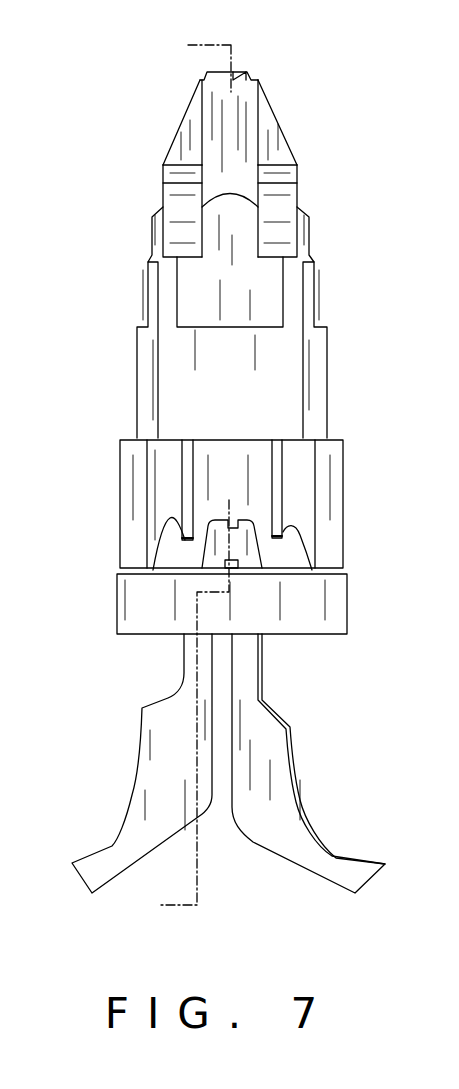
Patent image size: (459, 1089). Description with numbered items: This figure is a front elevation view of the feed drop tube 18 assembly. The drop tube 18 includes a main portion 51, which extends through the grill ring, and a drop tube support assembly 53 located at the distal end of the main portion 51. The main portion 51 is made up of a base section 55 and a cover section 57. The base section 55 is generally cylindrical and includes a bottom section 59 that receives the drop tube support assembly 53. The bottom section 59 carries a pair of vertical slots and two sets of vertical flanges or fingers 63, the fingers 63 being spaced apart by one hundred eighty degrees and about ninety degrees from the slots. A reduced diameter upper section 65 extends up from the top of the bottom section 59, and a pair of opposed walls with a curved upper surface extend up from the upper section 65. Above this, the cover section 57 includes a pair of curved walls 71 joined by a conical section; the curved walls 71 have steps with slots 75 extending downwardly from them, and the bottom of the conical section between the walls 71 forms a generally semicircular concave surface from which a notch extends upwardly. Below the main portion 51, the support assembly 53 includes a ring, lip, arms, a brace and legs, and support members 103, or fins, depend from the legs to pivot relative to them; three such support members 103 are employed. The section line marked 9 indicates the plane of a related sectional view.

The section line 9- 9 is at (172, 477).
The feed drop tube 18 is at (96, 337).
The main portion 51 is at (345, 283).
The drop tube support assembly 53 is at (368, 593).
The base section 55 is at (352, 509).
The cover section 57 is at (290, 107).
The bottom section 59 is at (343, 538).
The vertical fingers 63 is at (182, 478).
The upper section 65 is at (327, 383).
The curved walls 71 is at (176, 378).
The slots 75 is at (153, 570).
The support members 103 is at (118, 793).